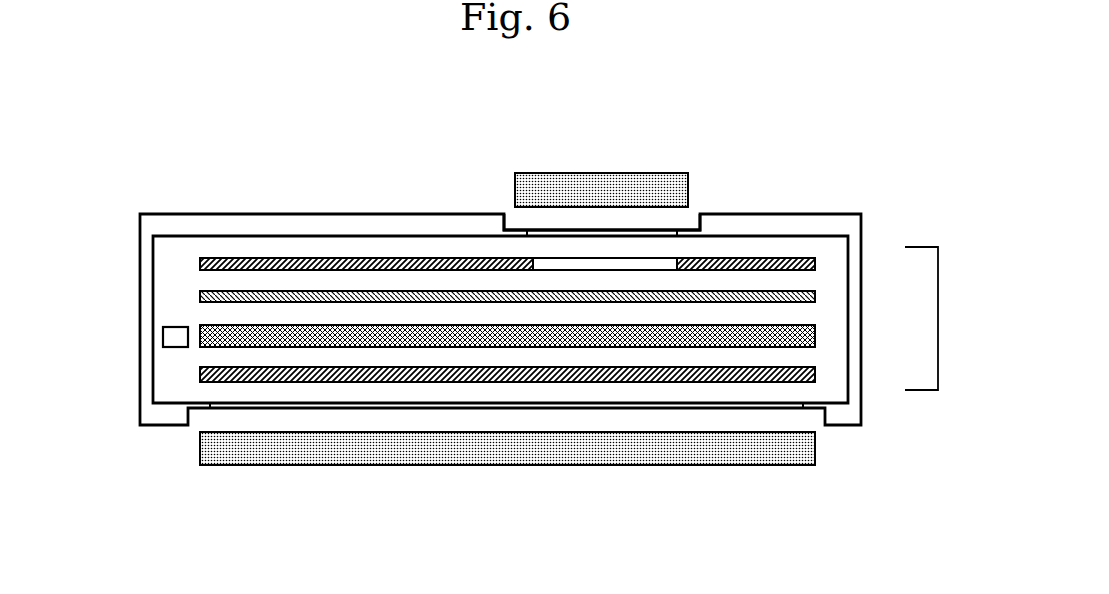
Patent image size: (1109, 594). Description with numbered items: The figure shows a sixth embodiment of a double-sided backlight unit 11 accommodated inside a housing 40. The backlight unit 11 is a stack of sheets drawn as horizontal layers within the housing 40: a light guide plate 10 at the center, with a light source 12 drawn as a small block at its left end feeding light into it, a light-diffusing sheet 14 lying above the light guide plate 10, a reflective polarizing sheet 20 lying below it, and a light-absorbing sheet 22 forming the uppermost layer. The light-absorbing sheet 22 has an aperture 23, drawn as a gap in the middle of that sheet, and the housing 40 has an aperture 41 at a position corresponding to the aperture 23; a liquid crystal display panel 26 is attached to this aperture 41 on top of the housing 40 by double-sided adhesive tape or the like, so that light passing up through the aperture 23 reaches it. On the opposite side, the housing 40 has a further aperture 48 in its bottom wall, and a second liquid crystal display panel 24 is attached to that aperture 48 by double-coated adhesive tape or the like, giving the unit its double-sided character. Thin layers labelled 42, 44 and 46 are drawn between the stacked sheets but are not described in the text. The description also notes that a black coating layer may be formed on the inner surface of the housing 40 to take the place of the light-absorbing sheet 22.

The light guide plate 10 is at (815, 340).
The double-sided backlight unit 11 is at (938, 375).
The light source 12 is at (163, 336).
The light-diffusing sheet 14 is at (815, 300).
The reflective polarizing sheet 20 is at (815, 378).
The light-absorbing sheet 22 is at (373, 260).
The aperture 23 is at (570, 265).
The liquid crystal display panel 24 is at (815, 445).
The liquid crystal display panel 26 is at (588, 172).
The housing 40 is at (267, 226).
The aperture 41 is at (597, 220).
The adhesive layer 42 is at (222, 282).
The adhesive layer 44 is at (222, 316).
The adhesive layer 46 is at (222, 357).
The aperture 48 is at (237, 415).